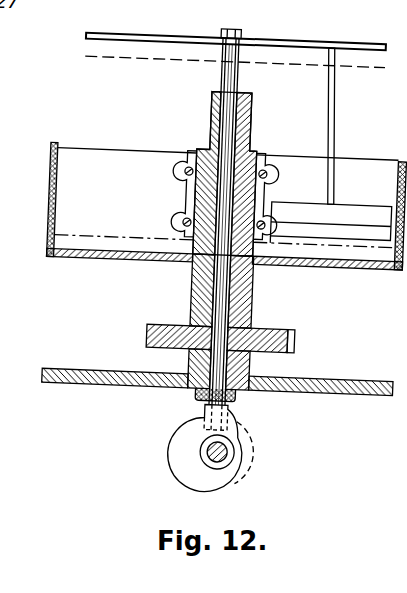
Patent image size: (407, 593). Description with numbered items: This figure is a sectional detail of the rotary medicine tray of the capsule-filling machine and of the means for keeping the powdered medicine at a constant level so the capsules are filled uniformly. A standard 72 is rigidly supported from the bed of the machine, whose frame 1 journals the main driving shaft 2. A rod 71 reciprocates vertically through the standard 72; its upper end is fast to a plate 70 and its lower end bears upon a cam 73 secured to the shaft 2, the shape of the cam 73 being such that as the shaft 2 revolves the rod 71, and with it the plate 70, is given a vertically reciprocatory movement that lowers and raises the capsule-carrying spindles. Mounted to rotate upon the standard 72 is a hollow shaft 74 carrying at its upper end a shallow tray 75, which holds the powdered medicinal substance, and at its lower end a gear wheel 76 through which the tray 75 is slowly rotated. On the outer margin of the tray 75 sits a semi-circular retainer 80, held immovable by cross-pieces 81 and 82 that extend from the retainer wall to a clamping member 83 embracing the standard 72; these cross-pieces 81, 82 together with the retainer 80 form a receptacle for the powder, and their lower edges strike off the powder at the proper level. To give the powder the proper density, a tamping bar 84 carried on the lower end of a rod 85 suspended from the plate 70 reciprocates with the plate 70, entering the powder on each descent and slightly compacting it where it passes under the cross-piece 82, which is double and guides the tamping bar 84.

The frame 1 is at (377, 375).
The main driving shaft 2 is at (241, 454).
The plate 70 is at (286, 38).
The rod 71 is at (214, 81).
The standard 72 is at (246, 121).
The cam 73 is at (196, 466).
The hollow shaft 74 is at (191, 293).
The tray 75 is at (100, 244).
The gear wheel 76 is at (297, 340).
The semi-circular retainer 80 is at (6, 172).
The cross-piece 81 is at (125, 153).
The cross-piece 82 is at (376, 153).
The clamping member 83 is at (183, 193).
The tamping bar 84 is at (297, 200).
The rod 85 is at (373, 94).